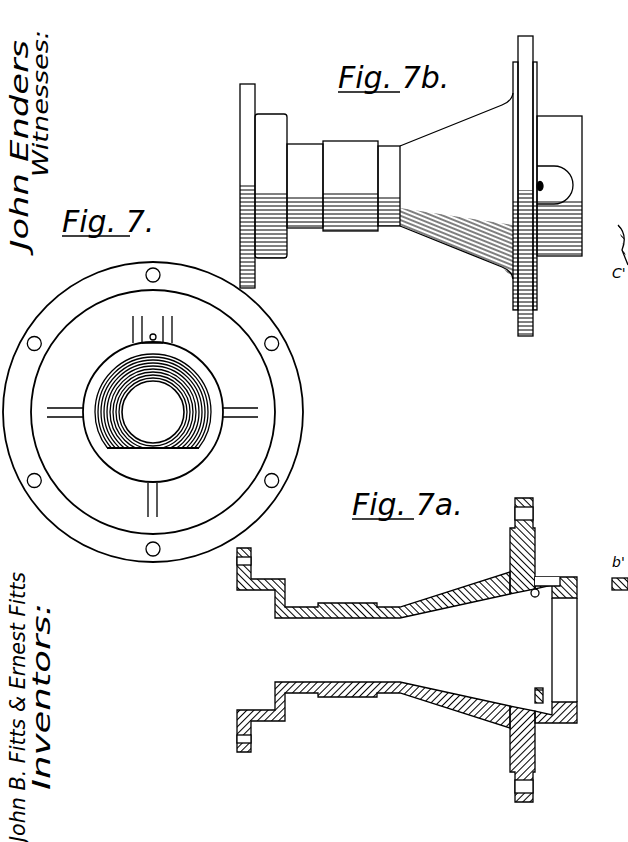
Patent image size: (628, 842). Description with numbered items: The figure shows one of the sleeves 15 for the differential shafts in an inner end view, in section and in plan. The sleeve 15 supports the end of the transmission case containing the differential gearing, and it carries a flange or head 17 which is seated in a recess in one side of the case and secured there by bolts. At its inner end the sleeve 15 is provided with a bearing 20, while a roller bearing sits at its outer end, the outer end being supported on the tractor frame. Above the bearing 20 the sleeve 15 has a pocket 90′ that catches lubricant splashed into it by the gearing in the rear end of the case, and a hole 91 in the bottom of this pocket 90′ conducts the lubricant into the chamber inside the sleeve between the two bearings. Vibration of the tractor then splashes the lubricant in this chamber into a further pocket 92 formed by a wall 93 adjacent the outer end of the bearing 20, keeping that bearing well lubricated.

In FIG. 7, the sleeve 15 is at (165, 412).
In FIG. 7B, the sleeve 15 is at (376, 186).
In FIG. 7A, the sleeve 15 is at (373, 650).
In FIG. 7, the flange or head 17 is at (152, 412).
In FIG. 7B, the flange or head 17 is at (526, 86).
In FIG. 7A, the flange or head 17 is at (511, 546).
In FIG. 7, the bearing 20 is at (210, 378).
In FIG. 7B, the bearing 20 is at (574, 250).
In FIG. 7A, the bearing 20 is at (563, 598).
In FIG. 7, the pocket 90′ is at (133, 325).
In FIG. 7B, the pocket 90′ is at (558, 187).
In FIG. 7A, the pocket 90′ is at (542, 572).
In FIG. 7, the hole 91 is at (157, 336).
In FIG. 7B, the hole 91 is at (540, 182).
In FIG. 7A, the hole 91 is at (531, 586).
In FIG. 7A, the pocket 92 is at (547, 703).
In FIG. 7, the wall 93 is at (145, 458).
In FIG. 7A, the wall 93 is at (535, 697).